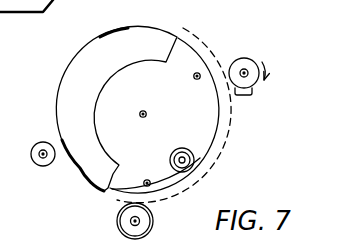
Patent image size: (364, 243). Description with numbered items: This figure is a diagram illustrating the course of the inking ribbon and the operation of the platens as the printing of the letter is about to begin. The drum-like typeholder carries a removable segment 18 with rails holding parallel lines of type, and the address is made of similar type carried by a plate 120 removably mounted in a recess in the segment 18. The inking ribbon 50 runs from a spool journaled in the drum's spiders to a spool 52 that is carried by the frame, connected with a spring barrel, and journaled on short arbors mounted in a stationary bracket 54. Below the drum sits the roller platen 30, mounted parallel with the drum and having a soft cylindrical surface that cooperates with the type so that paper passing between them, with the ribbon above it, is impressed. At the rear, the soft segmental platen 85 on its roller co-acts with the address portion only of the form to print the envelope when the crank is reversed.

The removable segment 18 is at (63, 52).
The plate 120 is at (104, 32).
The inking ribbon 50 is at (163, 181).
The stationary bracket 54 is at (192, 145).
The spool 52 is at (59, 160).
The roller platen 30 is at (153, 222).
The soft segmental platen 85 is at (245, 95).